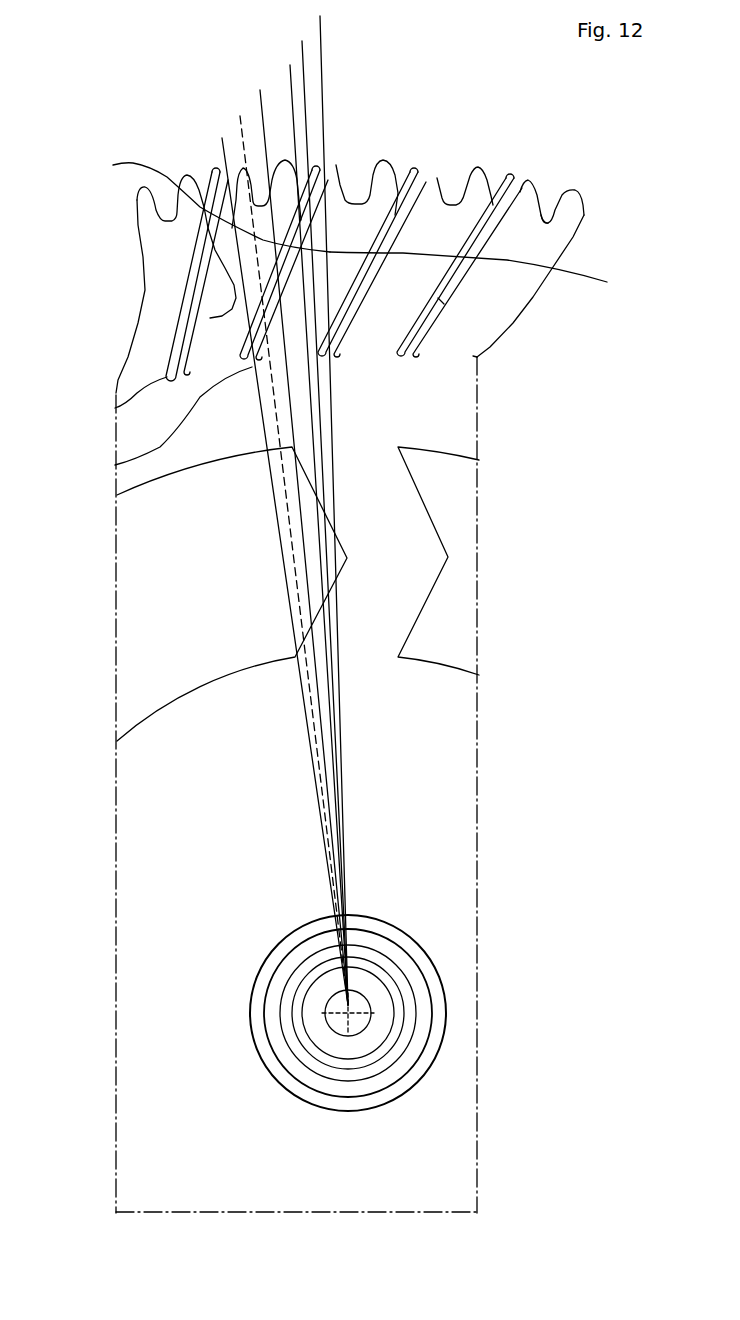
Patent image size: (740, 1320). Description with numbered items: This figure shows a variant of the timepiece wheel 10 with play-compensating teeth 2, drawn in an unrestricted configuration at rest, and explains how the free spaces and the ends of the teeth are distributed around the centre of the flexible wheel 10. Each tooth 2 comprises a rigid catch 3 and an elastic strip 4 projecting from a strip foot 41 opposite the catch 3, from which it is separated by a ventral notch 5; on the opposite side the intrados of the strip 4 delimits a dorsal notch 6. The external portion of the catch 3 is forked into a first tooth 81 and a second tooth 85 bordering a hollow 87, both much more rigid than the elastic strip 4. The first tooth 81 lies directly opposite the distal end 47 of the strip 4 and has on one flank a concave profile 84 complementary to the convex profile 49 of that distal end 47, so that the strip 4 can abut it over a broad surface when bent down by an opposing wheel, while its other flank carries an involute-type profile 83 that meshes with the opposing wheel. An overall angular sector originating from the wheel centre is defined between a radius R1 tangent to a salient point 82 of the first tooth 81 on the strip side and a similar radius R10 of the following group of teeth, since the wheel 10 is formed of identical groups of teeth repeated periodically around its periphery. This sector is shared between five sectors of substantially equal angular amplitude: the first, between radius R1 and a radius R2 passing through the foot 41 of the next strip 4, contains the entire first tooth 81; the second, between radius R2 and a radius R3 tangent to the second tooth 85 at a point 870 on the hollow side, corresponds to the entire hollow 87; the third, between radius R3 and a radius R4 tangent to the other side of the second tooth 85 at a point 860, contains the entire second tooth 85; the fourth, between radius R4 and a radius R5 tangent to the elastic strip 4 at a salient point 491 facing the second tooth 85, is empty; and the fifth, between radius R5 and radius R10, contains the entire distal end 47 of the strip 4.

The tooth 2 is at (200, 163).
The catch 3 is at (383, 338).
The elastic strip 4 is at (467, 282).
The ventral notch 5 is at (473, 356).
The dorsal notch 6 is at (438, 298).
The timepiece wheel 10 is at (458, 962).
The strip foot 41 is at (115, 408).
The distal end 47 is at (515, 165).
The convex profile 49 is at (210, 318).
The first tooth 81 is at (533, 205).
The salient point 82 is at (128, 193).
The profile 83 is at (348, 155).
The concave profile 84 is at (138, 257).
The second tooth 85 is at (573, 213).
The hollow 87 is at (552, 212).
The salient point 491 is at (503, 178).
The point 860 is at (487, 273).
The point 870 is at (202, 203).
The radius R1 is at (222, 138).
The radius R2 is at (240, 116).
The radius R3 is at (260, 90).
The radius R4 is at (290, 65).
The radius R5 is at (302, 41).
The radius R10 is at (320, 16).